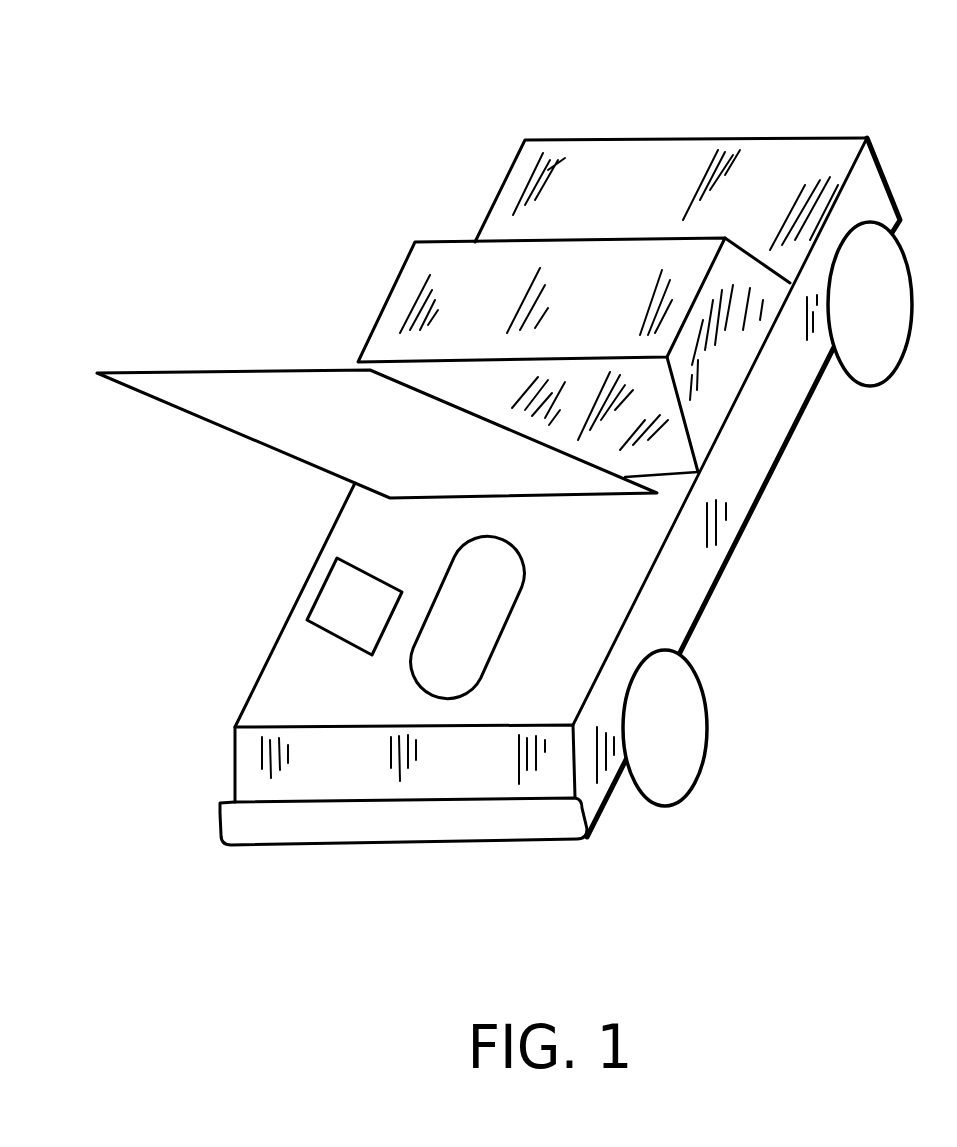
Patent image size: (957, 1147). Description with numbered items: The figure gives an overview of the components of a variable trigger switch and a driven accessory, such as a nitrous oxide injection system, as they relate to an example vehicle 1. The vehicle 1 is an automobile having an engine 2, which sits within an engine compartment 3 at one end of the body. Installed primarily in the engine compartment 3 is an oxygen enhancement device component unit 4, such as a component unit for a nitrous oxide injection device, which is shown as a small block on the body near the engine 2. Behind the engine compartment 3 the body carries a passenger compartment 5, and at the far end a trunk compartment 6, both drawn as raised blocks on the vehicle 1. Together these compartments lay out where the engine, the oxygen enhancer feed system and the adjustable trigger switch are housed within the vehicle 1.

The vehicle 1 is at (208, 877).
The engine 2 is at (485, 617).
The engine compartment 3 is at (342, 695).
The oxygen enhancement device component unit 4 is at (357, 598).
The passenger compartment 5 is at (737, 352).
The trunk compartment 6 is at (755, 178).